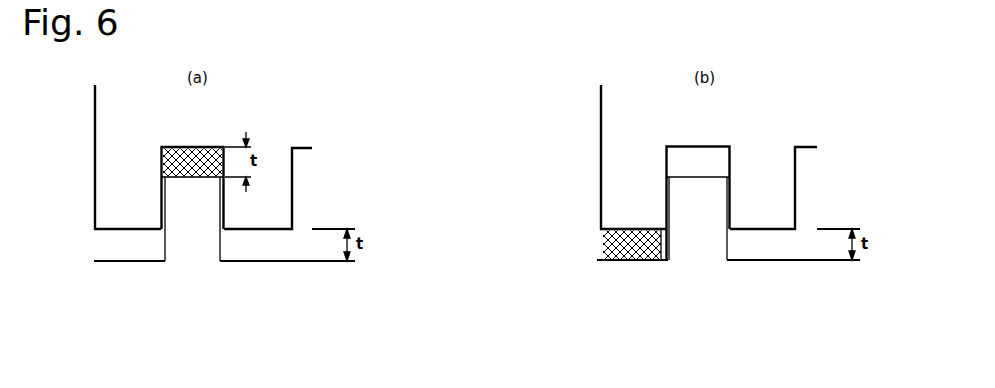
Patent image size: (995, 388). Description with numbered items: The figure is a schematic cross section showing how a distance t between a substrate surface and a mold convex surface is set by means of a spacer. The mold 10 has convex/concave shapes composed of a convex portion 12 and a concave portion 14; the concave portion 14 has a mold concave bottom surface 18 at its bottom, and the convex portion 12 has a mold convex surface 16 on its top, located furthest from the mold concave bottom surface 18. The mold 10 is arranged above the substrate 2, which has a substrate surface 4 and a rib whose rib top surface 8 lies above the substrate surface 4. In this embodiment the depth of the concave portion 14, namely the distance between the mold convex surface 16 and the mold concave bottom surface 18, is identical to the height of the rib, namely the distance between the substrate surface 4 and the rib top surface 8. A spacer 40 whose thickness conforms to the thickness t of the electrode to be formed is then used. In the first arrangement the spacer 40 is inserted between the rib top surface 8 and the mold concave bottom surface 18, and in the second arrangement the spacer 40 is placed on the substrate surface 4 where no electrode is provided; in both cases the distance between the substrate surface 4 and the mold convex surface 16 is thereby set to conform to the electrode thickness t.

The substrate 2 is at (273, 282).
The substrate surface 4 is at (105, 260).
The rib top surface 8 is at (190, 145).
The mold 10 is at (270, 121).
The convex portion 12 is at (277, 198).
The concave portion 14 is at (718, 163).
The mold convex surface 16 is at (150, 230).
The mold concave bottom surface 18 is at (202, 152).
The spacer 40 is at (173, 157).